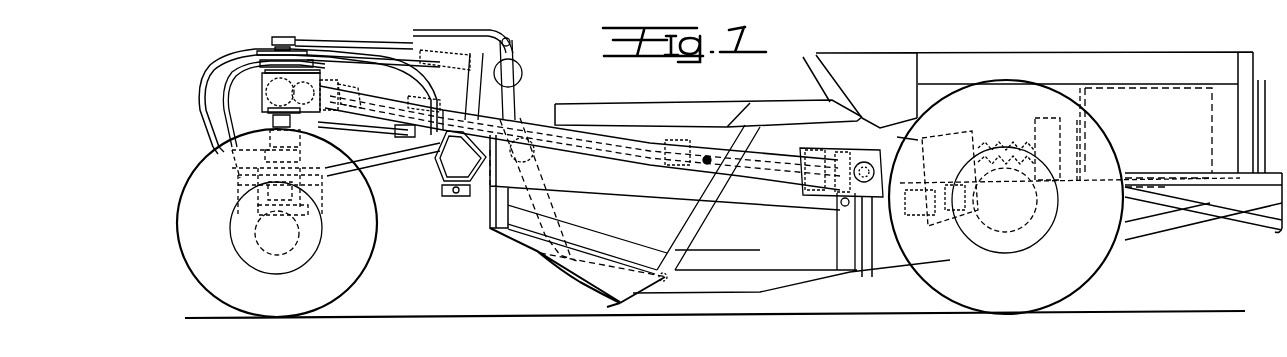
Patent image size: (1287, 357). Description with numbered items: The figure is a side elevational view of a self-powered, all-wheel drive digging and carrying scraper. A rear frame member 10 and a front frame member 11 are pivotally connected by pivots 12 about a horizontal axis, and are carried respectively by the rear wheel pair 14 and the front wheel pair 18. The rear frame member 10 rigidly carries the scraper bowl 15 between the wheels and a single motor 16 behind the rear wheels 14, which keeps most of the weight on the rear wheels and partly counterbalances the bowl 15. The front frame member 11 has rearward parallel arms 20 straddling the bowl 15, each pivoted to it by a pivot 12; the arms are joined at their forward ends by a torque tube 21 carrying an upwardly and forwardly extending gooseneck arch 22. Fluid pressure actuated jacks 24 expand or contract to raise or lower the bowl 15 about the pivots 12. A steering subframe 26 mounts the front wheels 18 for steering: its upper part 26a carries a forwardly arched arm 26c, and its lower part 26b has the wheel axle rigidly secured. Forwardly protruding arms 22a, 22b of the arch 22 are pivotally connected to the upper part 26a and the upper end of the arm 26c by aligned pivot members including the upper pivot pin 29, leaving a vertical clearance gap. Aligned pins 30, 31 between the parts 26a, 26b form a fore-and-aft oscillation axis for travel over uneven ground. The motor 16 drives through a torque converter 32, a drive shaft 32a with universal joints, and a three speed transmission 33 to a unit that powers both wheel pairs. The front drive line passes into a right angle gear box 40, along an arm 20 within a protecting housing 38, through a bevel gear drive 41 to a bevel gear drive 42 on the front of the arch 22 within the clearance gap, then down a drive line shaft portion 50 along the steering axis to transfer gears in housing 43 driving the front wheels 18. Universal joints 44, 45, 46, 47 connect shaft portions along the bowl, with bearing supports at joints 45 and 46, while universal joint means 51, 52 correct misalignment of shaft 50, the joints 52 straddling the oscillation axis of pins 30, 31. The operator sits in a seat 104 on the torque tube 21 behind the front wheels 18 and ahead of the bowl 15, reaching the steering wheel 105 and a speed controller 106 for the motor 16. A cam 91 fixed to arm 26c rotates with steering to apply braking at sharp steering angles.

The rear frame member 10 is at (895, 44).
The front frame member 11 is at (545, 108).
The pivots 12 is at (841, 205).
The rear wheel pair 14 is at (1105, 272).
The scraper bowl 15 is at (752, 103).
The motor 16 is at (1181, 88).
The front wheel pair 18 is at (372, 265).
The arms 20 is at (650, 198).
The torque tube 21 is at (440, 183).
The gooseneck arch 22 is at (363, 53).
The forwardly protruding arm 22a is at (318, 125).
The forwardly protruding arm 22b is at (307, 53).
The fluid pressure actuated jacks 24 is at (445, 60).
The steering subframe 26 is at (362, 166).
The subframe upper part 26a is at (212, 150).
The subframe lower part 26b is at (305, 200).
The subframe arm 26c is at (199, 97).
The upper pivot pin 29 is at (270, 58).
The pivot pin 30 is at (232, 178).
The pivot pin 31 is at (318, 190).
The fluid coupling or torque converter 32 is at (1043, 118).
The drive shaft 32a is at (1005, 140).
The three speed transmission 33 is at (947, 135).
The protecting housing 38 is at (620, 126).
The right angle gear box 40 is at (872, 237).
The bevel gear drive 41 is at (325, 88).
The bevel gear drive 42 is at (262, 92).
The transfer gear housing 43 is at (245, 241).
The universal joint 44 is at (803, 172).
The universal joint 45 is at (676, 140).
The universal joint 46 is at (512, 112).
The universal joint 47 is at (359, 89).
The drive line shaft portion 50 is at (258, 208).
The universal joint means 51 is at (272, 122).
The universal joint means 52 is at (292, 168).
The cam 91 is at (222, 66).
The seat 104 is at (512, 58).
The steering wheel 105 is at (413, 43).
The speed controller 106 is at (419, 96).